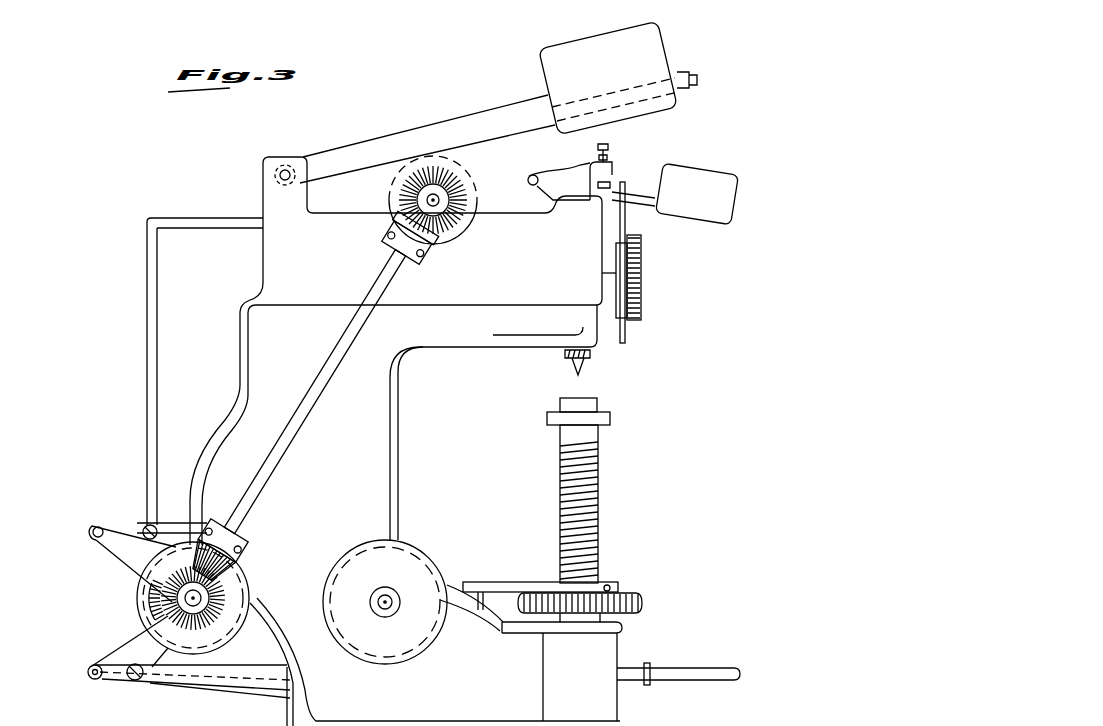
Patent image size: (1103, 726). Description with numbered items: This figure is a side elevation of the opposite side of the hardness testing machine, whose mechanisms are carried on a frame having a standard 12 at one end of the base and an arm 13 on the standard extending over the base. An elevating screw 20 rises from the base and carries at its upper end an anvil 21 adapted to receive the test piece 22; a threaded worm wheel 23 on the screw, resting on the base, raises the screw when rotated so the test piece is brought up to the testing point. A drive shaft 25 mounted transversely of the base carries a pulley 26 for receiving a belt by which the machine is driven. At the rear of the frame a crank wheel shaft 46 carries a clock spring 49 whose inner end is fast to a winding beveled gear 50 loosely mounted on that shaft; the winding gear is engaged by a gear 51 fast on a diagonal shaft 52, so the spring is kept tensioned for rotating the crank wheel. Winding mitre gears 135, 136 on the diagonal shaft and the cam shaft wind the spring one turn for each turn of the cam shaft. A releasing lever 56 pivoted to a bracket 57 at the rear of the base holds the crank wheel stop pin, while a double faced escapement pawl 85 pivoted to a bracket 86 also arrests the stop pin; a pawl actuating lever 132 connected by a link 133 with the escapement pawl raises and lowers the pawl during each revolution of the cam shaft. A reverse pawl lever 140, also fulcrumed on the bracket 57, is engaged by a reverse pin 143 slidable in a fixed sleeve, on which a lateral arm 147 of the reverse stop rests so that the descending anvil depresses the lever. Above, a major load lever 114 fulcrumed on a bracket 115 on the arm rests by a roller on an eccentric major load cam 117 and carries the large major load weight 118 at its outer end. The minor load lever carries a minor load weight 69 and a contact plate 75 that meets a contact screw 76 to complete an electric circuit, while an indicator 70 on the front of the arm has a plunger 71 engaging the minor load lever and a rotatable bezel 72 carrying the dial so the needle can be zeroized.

The standard 12 is at (262, 379).
The arm 13 is at (500, 330).
The elevating screw 20 is at (598, 509).
The anvil or test piece support 21 is at (610, 420).
The test piece 22 is at (597, 408).
The threaded worm wheel 23 is at (645, 606).
The drive shaft 25 is at (385, 605).
The pulley 26 is at (418, 557).
The crank wheel shaft 46 is at (201, 599).
The clock spring 49 is at (137, 614).
The winding beveled gear 50 is at (205, 612).
The gear 51 is at (253, 590).
The diagonal shaft 52 is at (293, 438).
The releasing lever 56 is at (268, 680).
The bracket 57 is at (132, 645).
The minor load weight 69 is at (697, 193).
The indicator 70 is at (641, 306).
The plunger 71 is at (625, 225).
The bezel 72 is at (641, 280).
The contact plate 75 is at (612, 183).
The contact screw 76 is at (612, 152).
The escapement pawl 85 is at (140, 530).
The bracket 86 is at (122, 551).
The major load lever 114 is at (442, 135).
The bracket 115 is at (270, 200).
The major load cam 117 is at (470, 168).
The major load weight 118 is at (667, 50).
The pawl actuating lever 132 is at (202, 222).
The link 133 is at (157, 327).
The winding mitre gear 135 is at (440, 252).
The winding mitre gear 136 is at (460, 230).
The reverse pawl lever 140 is at (225, 685).
The reverse pin 143 is at (490, 622).
The lateral arm 147 is at (513, 582).